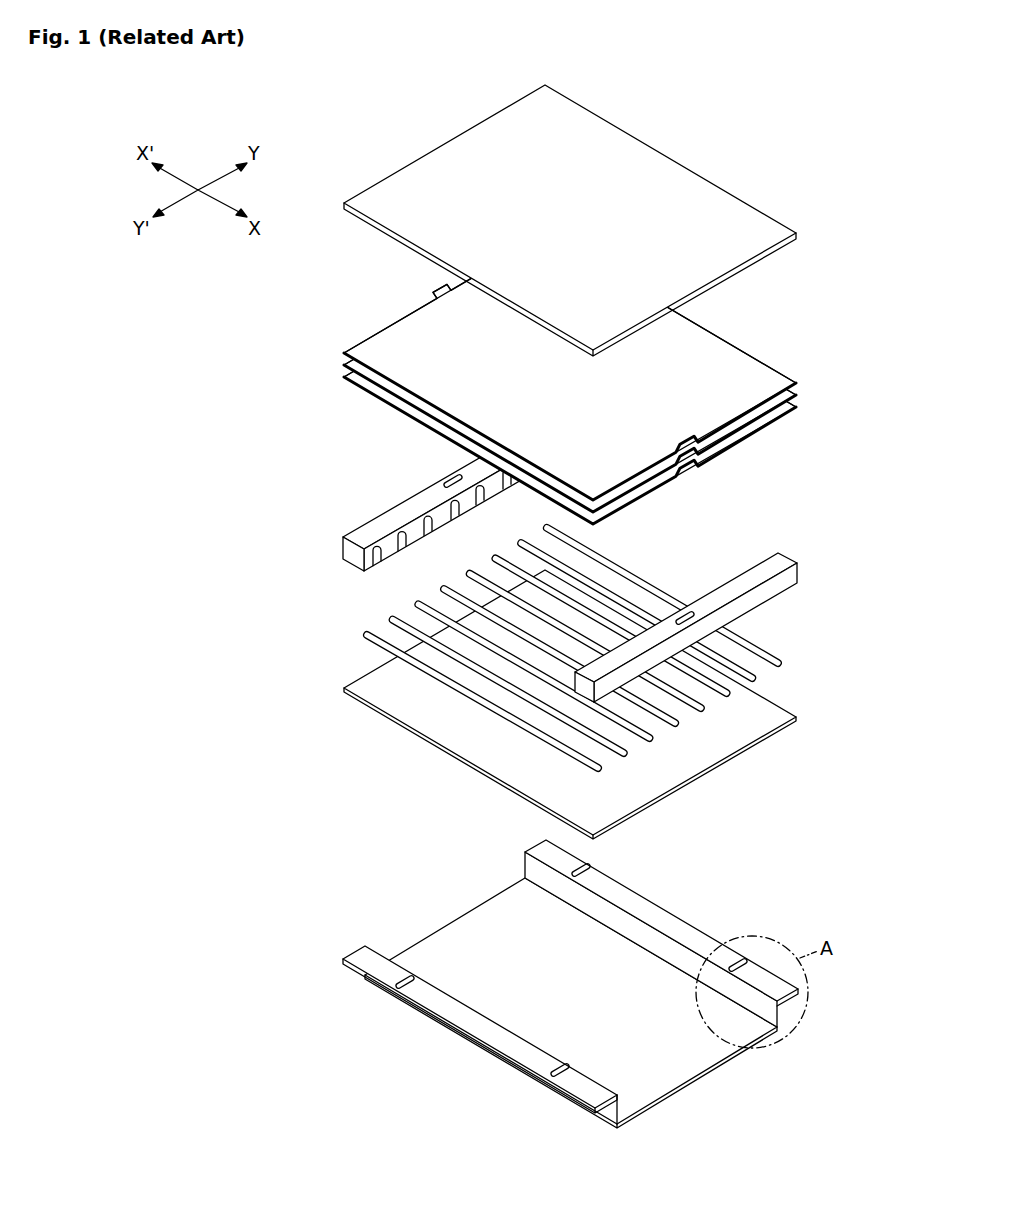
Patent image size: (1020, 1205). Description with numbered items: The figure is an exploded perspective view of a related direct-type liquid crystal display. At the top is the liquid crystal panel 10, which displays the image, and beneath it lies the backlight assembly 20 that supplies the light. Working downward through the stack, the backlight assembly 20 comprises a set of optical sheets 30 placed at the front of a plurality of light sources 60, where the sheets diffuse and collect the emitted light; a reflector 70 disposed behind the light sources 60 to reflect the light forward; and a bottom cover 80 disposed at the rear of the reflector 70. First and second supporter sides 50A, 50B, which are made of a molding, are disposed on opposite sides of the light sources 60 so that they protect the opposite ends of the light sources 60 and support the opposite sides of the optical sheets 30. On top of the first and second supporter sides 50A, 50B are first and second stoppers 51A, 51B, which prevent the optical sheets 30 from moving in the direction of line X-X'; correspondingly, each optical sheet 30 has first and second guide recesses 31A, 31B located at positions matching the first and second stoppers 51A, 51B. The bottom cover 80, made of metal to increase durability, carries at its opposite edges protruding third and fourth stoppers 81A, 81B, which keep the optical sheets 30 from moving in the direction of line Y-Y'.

The liquid crystal panel 10 is at (695, 172).
The backlight assembly 20 is at (863, 327).
The optical sheets 30 is at (588, 379).
The first guide recess 31A is at (450, 296).
The second guide recess 31B is at (694, 462).
The first supporter side 50A is at (372, 522).
The second supporter side 50B is at (773, 592).
The first stopper 51A is at (446, 480).
The second stopper 51B is at (690, 606).
The light sources 60 is at (781, 664).
The reflector 70 is at (747, 728).
The bottom cover 80 is at (704, 1088).
The third stopper 81A is at (401, 973).
The fourth stopper 81B is at (738, 957).